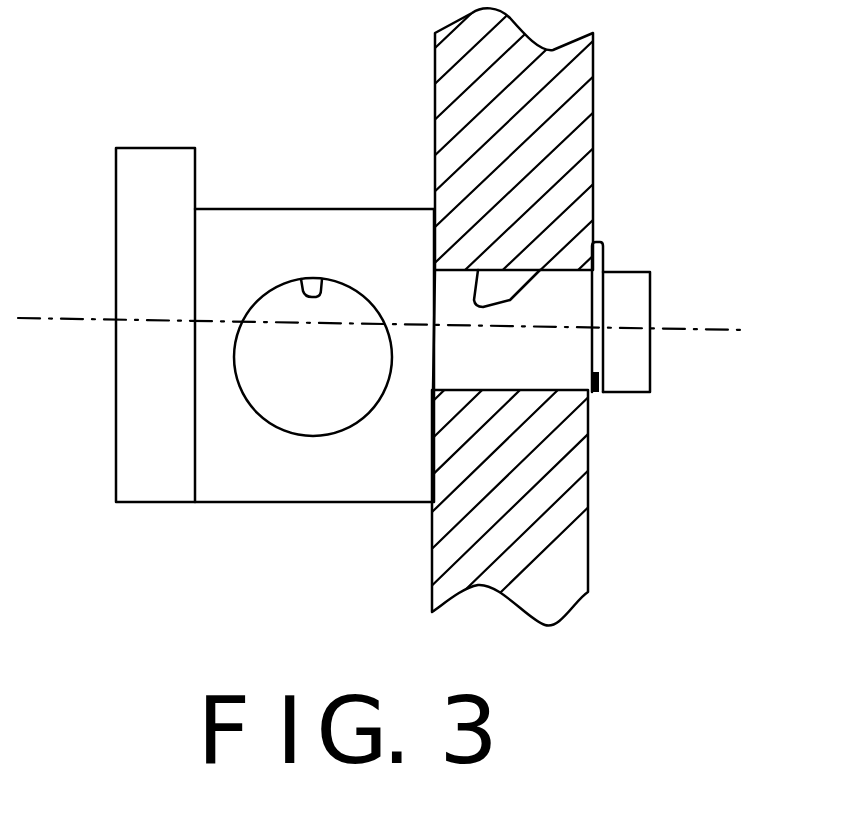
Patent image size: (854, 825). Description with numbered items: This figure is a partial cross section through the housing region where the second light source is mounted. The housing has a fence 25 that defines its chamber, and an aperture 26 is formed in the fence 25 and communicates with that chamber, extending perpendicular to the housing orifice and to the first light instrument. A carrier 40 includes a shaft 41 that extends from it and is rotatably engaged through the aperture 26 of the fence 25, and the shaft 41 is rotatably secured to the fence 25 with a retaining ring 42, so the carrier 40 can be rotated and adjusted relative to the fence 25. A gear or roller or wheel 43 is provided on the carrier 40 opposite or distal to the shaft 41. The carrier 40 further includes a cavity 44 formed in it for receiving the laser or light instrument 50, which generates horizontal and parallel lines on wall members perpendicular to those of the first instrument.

The fence 25 is at (568, 113).
The aperture 26 is at (537, 271).
The carrier 40 is at (307, 487).
The shaft 41 is at (625, 375).
The retaining ring 42 is at (603, 255).
The gear or roller or wheel 43 is at (150, 160).
The cavity 44 is at (302, 288).
The laser or light instrument 50 is at (273, 372).